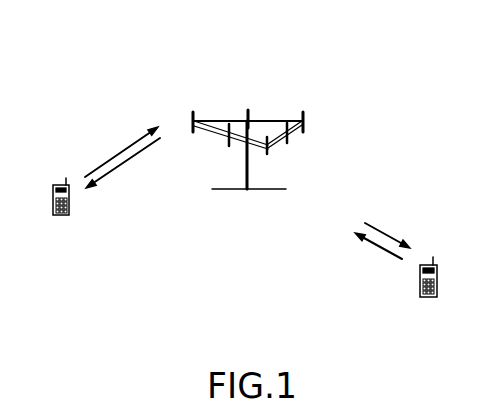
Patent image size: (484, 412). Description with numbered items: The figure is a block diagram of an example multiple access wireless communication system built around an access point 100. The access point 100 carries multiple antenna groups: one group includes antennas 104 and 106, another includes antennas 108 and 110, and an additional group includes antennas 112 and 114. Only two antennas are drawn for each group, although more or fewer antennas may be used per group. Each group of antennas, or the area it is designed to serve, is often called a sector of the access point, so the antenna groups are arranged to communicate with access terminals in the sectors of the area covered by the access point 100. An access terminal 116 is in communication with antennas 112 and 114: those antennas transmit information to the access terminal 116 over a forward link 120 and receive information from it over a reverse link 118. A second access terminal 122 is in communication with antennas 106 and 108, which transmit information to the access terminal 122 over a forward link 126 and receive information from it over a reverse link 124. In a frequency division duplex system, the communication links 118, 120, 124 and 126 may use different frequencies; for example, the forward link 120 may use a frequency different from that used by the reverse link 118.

The access point 100 is at (231, 189).
The antenna 104 is at (269, 153).
The antenna 106 is at (289, 143).
The antenna 108 is at (306, 128).
The antenna 110 is at (248, 110).
The antenna 112 is at (196, 119).
The antenna 114 is at (229, 147).
The access terminal 116 is at (65, 179).
The reverse link 118 is at (119, 148).
The forward link 120 is at (131, 161).
The access terminal 122 is at (432, 258).
The reverse link 124 is at (377, 244).
The forward link 126 is at (390, 236).